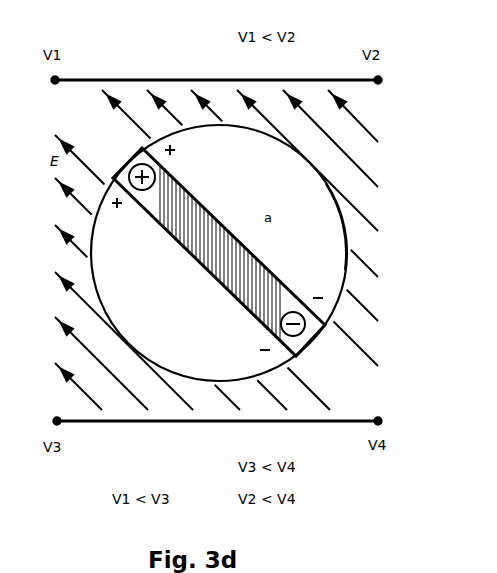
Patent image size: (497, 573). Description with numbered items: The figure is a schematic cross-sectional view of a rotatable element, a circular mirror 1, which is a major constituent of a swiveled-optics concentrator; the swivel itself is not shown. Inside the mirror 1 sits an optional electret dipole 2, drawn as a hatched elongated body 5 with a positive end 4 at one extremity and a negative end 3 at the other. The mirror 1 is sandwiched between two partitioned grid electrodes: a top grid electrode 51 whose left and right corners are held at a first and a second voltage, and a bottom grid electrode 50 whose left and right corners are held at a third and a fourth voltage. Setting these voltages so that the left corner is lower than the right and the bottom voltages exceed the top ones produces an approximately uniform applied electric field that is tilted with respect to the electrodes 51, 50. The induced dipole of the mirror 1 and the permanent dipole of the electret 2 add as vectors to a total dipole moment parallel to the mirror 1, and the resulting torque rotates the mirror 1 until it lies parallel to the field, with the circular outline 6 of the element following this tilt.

The rotatable element (circular mirror) 1 is at (219, 253).
The electret dipole 2 is at (182, 177).
The negative end of the electret 3 is at (302, 352).
The positive end of the electret 4 is at (134, 157).
The body of the electret 5 is at (218, 280).
The cell membrane 6 is at (326, 184).
The bottom electrode 50 is at (182, 424).
The top electrode 51 is at (183, 78).